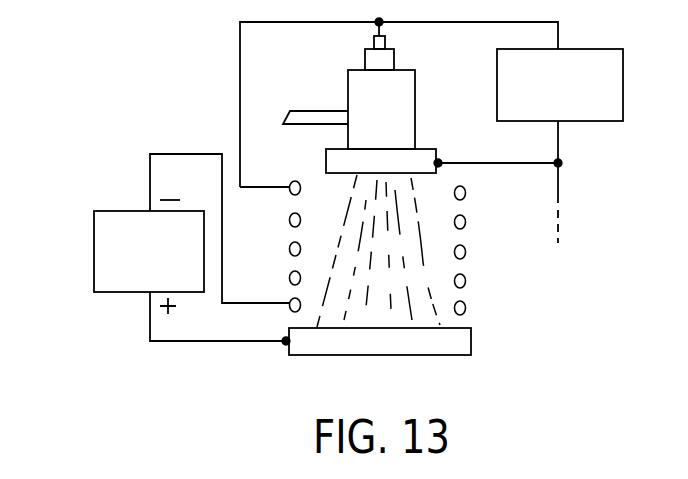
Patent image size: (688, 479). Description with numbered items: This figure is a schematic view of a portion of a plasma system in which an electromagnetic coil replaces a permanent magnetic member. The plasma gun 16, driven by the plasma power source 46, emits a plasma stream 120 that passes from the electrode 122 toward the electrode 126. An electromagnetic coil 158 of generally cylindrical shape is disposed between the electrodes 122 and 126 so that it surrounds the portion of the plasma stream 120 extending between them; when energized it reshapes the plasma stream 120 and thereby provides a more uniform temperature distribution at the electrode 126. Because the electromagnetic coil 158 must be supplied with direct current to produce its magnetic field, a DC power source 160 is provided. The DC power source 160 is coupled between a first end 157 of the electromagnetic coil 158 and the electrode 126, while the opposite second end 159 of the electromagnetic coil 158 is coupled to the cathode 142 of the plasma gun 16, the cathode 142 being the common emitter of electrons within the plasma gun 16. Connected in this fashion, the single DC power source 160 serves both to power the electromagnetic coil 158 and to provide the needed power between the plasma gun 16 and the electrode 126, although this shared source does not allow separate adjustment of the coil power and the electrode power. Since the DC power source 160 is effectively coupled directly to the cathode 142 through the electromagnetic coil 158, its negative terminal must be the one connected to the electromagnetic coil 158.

The plasma gun 16 is at (415, 112).
The plasma power source 46 is at (623, 67).
The plasma stream 120 is at (422, 236).
The electrode 122 is at (436, 156).
The electrode 126 is at (462, 355).
The cathode 142 is at (394, 58).
The first end 157 is at (290, 311).
The electromagnetic coil 158 is at (466, 281).
The second end 159 is at (290, 183).
The DC power source 160 is at (94, 243).